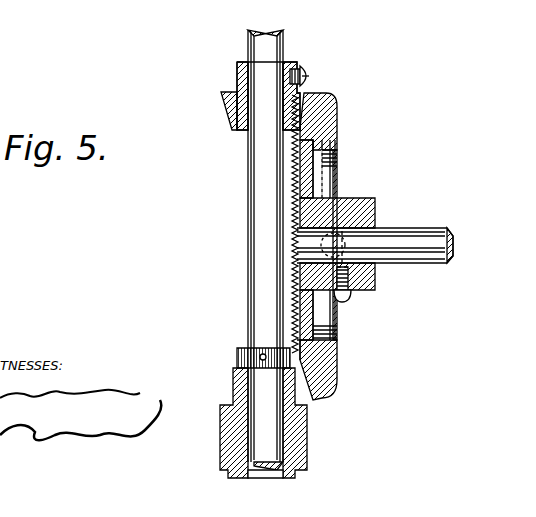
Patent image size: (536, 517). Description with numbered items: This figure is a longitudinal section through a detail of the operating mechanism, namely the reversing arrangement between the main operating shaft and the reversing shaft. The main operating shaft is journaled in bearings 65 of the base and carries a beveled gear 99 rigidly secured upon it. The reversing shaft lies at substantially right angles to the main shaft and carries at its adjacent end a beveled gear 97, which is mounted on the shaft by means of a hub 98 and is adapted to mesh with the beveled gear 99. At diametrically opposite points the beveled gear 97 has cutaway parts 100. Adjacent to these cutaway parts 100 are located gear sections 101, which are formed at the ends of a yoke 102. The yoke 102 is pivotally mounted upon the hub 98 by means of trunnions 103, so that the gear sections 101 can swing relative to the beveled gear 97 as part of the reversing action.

The bearings 65 is at (224, 434).
The beveled gear 97 is at (292, 165).
The hub 98 is at (370, 208).
The beveled gear 99 is at (226, 97).
The cutaway parts 100 is at (308, 95).
The gear sections 101 is at (331, 96).
The yoke 102 is at (332, 190).
The trunnions 103 is at (342, 212).